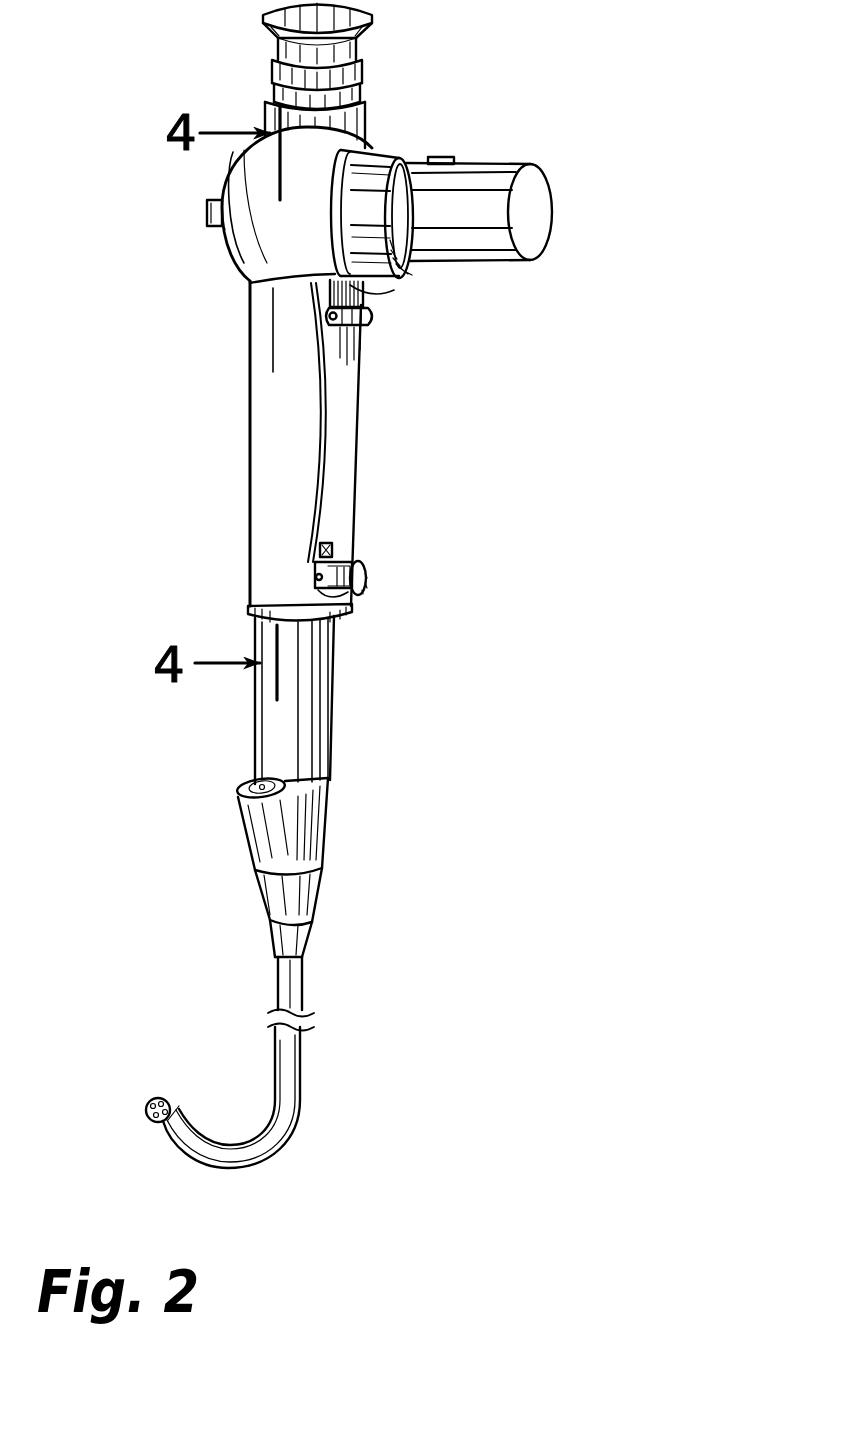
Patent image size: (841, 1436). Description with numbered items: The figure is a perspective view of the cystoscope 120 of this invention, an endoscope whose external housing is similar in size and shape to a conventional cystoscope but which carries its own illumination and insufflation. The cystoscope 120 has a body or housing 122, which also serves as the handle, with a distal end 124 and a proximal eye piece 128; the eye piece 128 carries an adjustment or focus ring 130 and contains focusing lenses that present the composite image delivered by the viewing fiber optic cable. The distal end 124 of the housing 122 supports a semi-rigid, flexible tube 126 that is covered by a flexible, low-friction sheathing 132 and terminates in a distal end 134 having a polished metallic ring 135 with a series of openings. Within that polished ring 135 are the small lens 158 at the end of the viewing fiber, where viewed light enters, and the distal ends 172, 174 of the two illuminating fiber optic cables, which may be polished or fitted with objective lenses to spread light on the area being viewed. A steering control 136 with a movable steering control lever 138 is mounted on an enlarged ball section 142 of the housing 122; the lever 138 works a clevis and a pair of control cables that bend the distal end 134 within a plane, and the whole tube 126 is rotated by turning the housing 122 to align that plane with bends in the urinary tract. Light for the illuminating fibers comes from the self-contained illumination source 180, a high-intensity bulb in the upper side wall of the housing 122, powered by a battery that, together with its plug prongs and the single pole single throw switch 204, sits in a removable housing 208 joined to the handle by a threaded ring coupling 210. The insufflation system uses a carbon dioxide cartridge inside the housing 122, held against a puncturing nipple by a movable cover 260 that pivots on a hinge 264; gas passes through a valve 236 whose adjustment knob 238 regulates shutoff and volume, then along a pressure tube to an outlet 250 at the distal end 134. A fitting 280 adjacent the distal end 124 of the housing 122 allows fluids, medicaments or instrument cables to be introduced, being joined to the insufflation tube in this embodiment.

The cystoscope 120 is at (374, 467).
The housing 122 is at (246, 505).
The distal end of the housing 124 is at (342, 686).
The tube 126 is at (312, 976).
The eye piece 128 is at (370, 95).
The focus ring 130 is at (370, 55).
The sheathing 132 is at (302, 1070).
The distal end of the tube 134 is at (176, 1094).
The polished metallic ring 135 is at (165, 1132).
The steering control 136 is at (218, 230).
The steering control lever 138 is at (208, 206).
The enlarged ball section 142 is at (344, 160).
The small lens 158 is at (160, 1103).
The distal end of illuminating fiber optic cable 172 is at (170, 1108).
The distal end of illuminating fiber optic cable 174 is at (147, 1108).
The illumination source 180 is at (418, 272).
The switch 204 is at (450, 159).
The removable housing 208 is at (505, 257).
The threaded ring coupling 210 is at (384, 276).
The valve 236 is at (365, 556).
The adjustment knob 238 is at (367, 580).
The outlet 250 is at (148, 1120).
The movable cover 260 is at (350, 414).
The hinge 264 is at (323, 318).
The fitting 280 is at (236, 803).